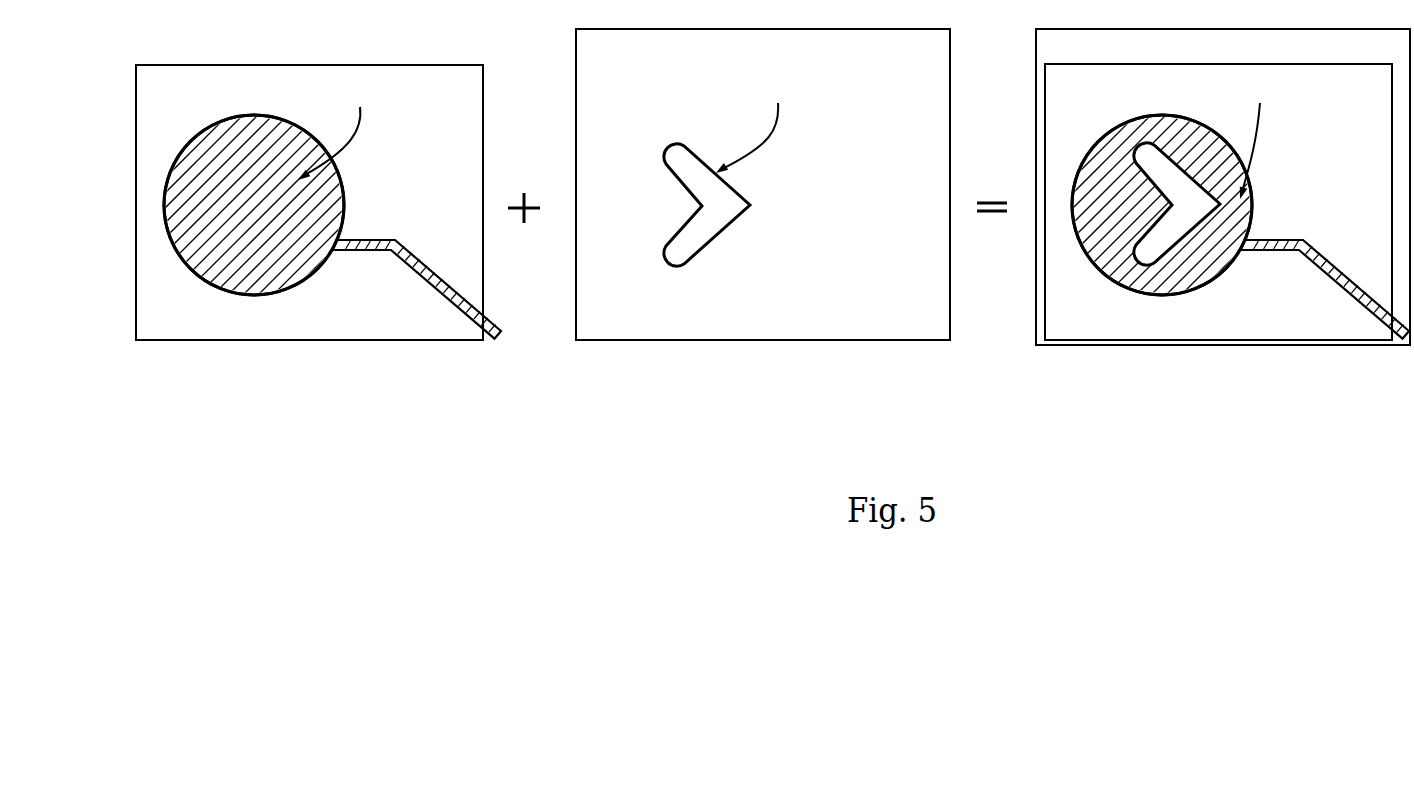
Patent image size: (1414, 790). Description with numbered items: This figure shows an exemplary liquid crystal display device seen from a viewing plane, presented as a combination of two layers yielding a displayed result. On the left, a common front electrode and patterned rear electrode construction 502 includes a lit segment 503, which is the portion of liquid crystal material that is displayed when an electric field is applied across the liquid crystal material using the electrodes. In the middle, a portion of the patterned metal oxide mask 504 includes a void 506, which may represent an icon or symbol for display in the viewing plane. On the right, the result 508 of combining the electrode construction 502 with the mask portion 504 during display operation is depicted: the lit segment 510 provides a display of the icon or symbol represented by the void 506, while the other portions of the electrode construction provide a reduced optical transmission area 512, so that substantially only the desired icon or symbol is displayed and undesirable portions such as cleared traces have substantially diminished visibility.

The common front electrode and patterned rear electrode construction 502 is at (413, 317).
The lit segment 503 is at (330, 188).
The portion of the patterned metal oxide mask 504 is at (860, 307).
The void 506 is at (752, 205).
The resulting composite display layer 508 is at (1290, 317).
The lit segment of composite 510 is at (1148, 170).
The region of reduced optical transmission 512 is at (1230, 208).